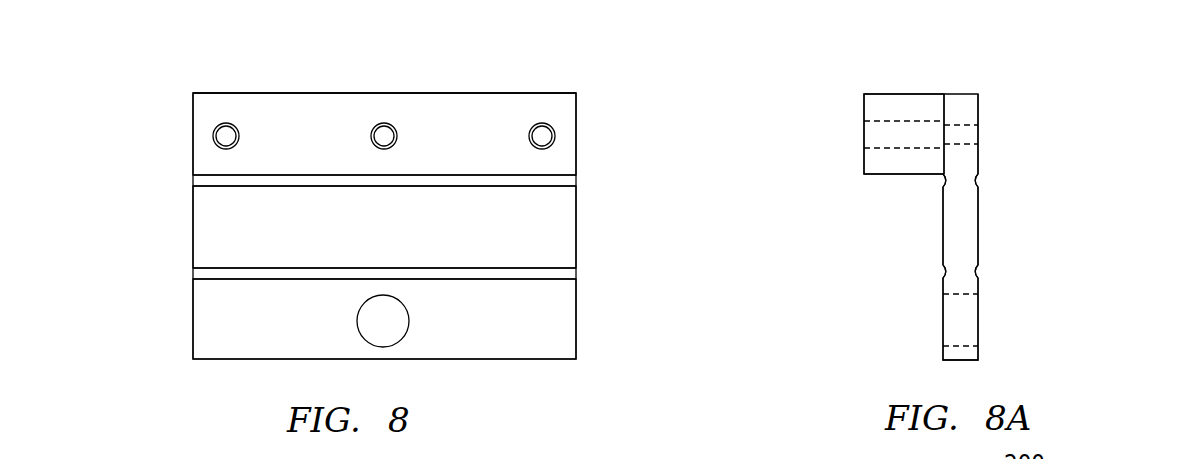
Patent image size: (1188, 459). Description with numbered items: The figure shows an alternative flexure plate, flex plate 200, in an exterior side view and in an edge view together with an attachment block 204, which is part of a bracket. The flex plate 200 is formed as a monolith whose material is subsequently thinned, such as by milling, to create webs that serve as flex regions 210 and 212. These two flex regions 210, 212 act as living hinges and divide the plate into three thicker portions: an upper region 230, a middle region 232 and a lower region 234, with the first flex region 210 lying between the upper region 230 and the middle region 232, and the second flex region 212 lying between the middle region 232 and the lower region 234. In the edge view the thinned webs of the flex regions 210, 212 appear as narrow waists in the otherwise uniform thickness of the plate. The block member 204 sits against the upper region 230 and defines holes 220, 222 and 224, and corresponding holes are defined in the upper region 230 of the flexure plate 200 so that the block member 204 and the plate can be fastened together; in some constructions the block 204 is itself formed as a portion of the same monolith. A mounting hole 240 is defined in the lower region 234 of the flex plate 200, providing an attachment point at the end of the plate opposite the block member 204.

In FIG. 8, the flex plate 200 is at (156, 233).
In FIG. 8A, the flex plate 200 is at (975, 79).
In FIG. 8, the attachment block 204 is at (352, 88).
In FIG. 8A, the attachment block 204 is at (877, 93).
In FIG. 8, the flex region 210 is at (183, 181).
In FIG. 8A, the flex region 210 is at (985, 180).
In FIG. 8, the flex region 212 is at (183, 273).
In FIG. 8A, the flex region 212 is at (987, 272).
In FIG. 8, the hole 220 is at (218, 124).
In FIG. 8, the hole 222 is at (393, 125).
In FIG. 8, the hole 224 is at (553, 125).
In FIG. 8A, the hole 224 is at (853, 138).
In FIG. 8, the upper region 230 is at (178, 125).
In FIG. 8A, the upper region 230 is at (1007, 122).
In FIG. 8, the middle region 232 is at (582, 236).
In FIG. 8A, the middle region 232 is at (1017, 224).
In FIG. 8, the lower region 234 is at (183, 335).
In FIG. 8A, the lower region 234 is at (1012, 311).
In FIG. 8, the mounting hole 240 is at (352, 333).
In FIG. 8A, the mounting hole 240 is at (972, 330).